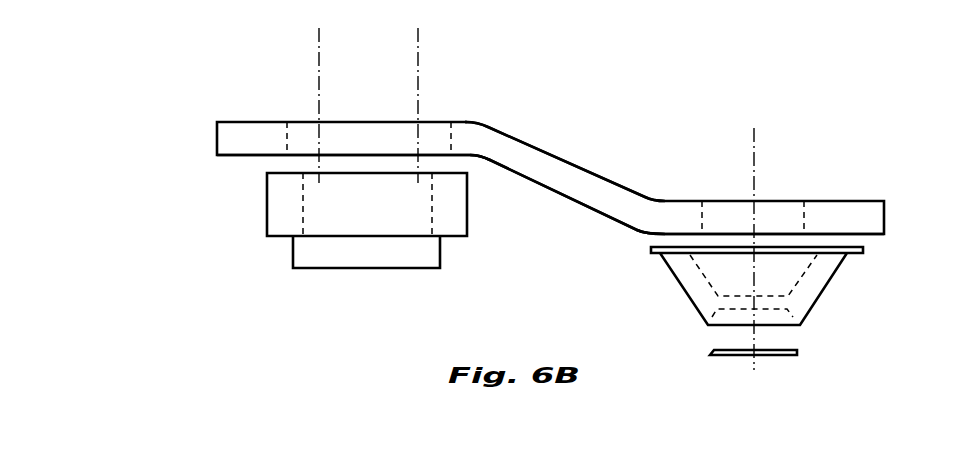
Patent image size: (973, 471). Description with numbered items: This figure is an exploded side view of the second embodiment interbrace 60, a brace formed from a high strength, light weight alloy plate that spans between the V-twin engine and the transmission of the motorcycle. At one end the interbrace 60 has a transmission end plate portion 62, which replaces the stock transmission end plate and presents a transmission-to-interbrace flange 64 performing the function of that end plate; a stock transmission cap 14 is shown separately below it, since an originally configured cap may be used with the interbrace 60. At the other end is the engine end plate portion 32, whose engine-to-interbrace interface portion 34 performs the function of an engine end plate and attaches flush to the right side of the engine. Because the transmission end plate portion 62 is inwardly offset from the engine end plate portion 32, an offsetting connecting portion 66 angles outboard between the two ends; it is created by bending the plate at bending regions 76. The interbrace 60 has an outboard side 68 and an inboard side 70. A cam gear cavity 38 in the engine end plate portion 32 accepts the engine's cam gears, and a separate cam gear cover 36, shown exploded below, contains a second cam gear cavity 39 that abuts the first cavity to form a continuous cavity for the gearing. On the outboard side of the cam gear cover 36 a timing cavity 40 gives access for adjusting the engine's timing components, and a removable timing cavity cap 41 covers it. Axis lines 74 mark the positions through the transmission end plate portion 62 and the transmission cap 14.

The interbrace 60 is at (142, 98).
The transmission end plate portion 62 is at (223, 138).
The transmission-to-interbrace flange 64 is at (253, 122).
The offsetting connecting portion 66 is at (590, 195).
The outboard side 68 is at (245, 157).
The inboard side 70 is at (512, 133).
The fastener axis 74 is at (357, 122).
The bending regions 76 is at (487, 137).
The transmission cap 14 is at (277, 225).
The engine end plate portion 32 is at (865, 208).
The engine-to-interbrace interface portion 34 is at (670, 201).
The cam gear cavity 38 is at (732, 220).
The cam gear cover 36 is at (823, 292).
The second cam gear cavity 39 is at (788, 270).
The timing cavity 40 is at (787, 313).
The timing cavity cap 41 is at (797, 352).